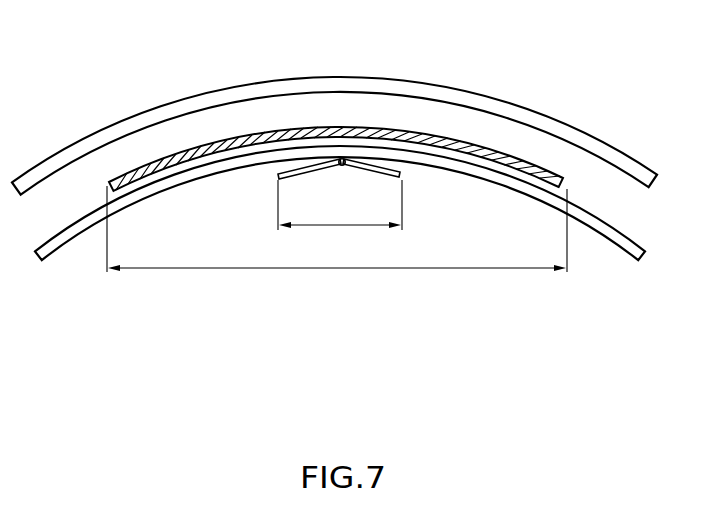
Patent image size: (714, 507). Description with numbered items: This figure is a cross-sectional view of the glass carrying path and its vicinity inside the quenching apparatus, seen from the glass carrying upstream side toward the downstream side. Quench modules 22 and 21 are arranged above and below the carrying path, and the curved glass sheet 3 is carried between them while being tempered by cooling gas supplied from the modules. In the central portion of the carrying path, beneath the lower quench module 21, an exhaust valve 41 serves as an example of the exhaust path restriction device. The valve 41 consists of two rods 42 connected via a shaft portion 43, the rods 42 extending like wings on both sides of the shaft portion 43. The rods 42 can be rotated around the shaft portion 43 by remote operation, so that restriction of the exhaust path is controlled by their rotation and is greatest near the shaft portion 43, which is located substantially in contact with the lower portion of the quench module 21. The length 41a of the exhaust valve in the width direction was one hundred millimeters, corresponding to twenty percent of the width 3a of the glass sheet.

The quench module 22 is at (628, 164).
The quench module 21 is at (613, 237).
The glass sheet 3 is at (420, 137).
The exhaust valve 41 is at (310, 98).
The rods 42 is at (315, 160).
The shaft portion 43 is at (341, 159).
The length of the exhaust valve 41a is at (340, 205).
The width of the glass sheet 3a is at (337, 229).